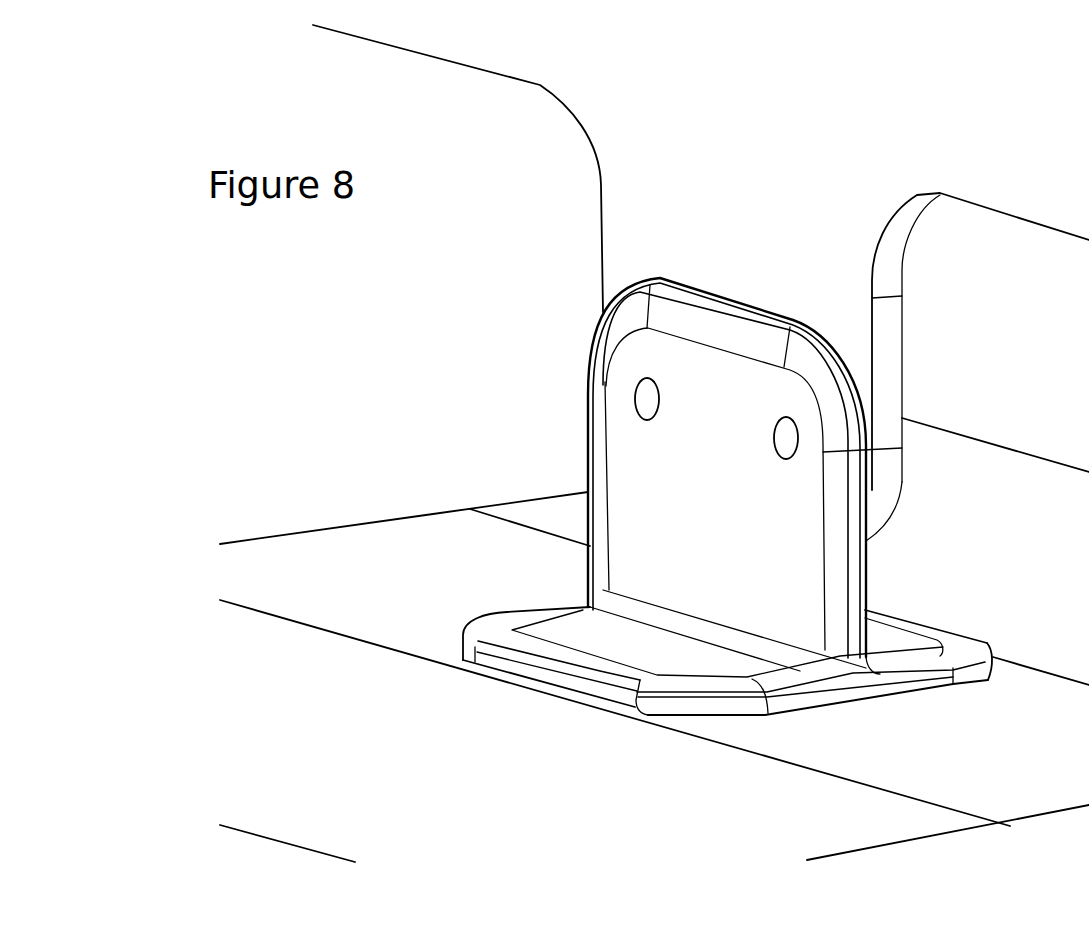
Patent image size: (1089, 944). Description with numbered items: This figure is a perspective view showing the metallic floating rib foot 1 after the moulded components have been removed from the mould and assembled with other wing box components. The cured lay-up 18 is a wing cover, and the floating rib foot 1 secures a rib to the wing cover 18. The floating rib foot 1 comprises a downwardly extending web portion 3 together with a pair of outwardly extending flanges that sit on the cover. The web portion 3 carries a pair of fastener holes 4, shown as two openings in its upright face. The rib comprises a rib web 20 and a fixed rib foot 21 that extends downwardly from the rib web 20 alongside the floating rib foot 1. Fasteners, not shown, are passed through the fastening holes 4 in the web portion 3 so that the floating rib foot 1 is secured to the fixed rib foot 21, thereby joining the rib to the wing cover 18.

The floating rib foot 1 is at (727, 496).
The web portion 3 is at (710, 476).
The fastener holes 4 is at (773, 442).
The cured lay-up 18 is at (318, 538).
The rib web 20 is at (1040, 223).
The fixed rib foot 21 is at (623, 181).